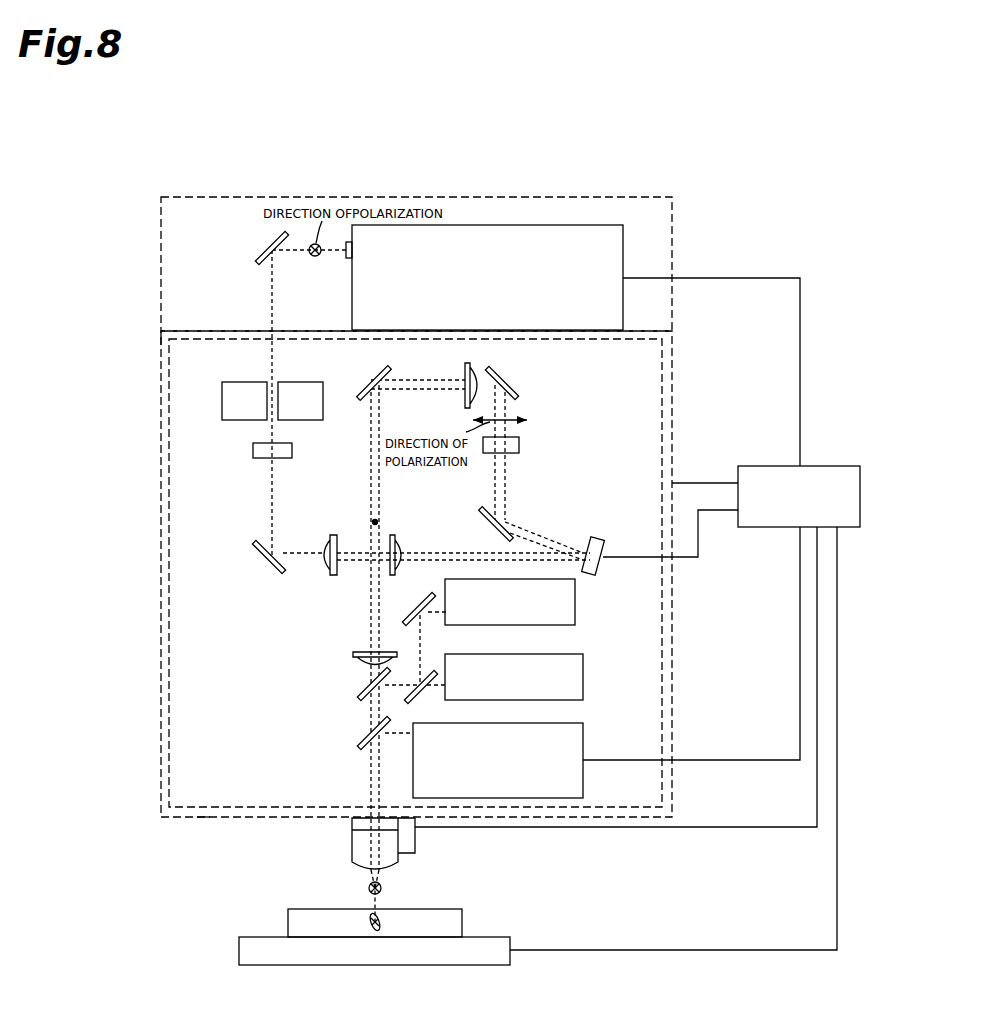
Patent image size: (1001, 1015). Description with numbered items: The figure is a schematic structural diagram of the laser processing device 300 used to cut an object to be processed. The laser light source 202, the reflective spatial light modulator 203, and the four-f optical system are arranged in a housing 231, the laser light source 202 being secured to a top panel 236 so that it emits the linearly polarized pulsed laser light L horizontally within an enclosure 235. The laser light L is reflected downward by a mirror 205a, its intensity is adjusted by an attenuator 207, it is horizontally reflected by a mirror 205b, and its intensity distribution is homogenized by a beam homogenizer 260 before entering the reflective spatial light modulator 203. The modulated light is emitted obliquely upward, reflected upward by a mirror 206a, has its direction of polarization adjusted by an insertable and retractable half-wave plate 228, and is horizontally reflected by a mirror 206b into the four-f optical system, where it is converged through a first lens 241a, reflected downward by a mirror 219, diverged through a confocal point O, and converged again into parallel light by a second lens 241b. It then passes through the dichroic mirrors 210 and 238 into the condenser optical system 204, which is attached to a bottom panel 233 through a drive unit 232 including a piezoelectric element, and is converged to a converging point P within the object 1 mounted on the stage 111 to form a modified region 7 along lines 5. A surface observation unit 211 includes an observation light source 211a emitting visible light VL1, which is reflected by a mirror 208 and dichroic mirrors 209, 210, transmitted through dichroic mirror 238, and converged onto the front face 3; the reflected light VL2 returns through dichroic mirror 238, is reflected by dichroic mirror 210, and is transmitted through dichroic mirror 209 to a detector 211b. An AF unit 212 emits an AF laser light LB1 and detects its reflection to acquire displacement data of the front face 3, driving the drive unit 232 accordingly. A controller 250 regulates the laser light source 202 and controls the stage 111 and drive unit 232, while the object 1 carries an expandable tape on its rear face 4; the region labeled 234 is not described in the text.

The laser processing device 300 is at (668, 152).
The enclosure 235 is at (232, 196).
The optical system housing 234 is at (162, 630).
The top panel 236 is at (642, 333).
The housing 231 is at (152, 344).
The bottom panel 233 is at (197, 816).
The laser light source 202 is at (623, 245).
The mirror 205a is at (268, 240).
The mirror 205b is at (276, 567).
The laser light L is at (272, 290).
The mirror 219 is at (376, 376).
The attenuator 207 is at (235, 443).
The first lens 241a is at (474, 360).
The second lens 241b is at (353, 655).
The mirror 206a is at (484, 512).
The mirror 206b is at (517, 392).
The half-wave plate 228 is at (521, 445).
The confocal point O is at (376, 520).
The reflective spatial light modulator 203 is at (597, 537).
The beam homogenizer 260 is at (352, 582).
The mirror 208 is at (413, 614).
The dichroic mirror 210 is at (360, 692).
The dichroic mirror 209 is at (421, 700).
The dichroic mirror 238 is at (360, 743).
The AF laser light LB1 is at (400, 735).
The visible light VL1 is at (446, 612).
The reflected light VL2 is at (445, 678).
The observation light source 211a is at (575, 605).
The detector 211b is at (583, 680).
The surface observation unit 211 is at (733, 595).
The AF unit 212 is at (583, 738).
The controller 250 is at (818, 466).
The condenser optical system 204 is at (350, 858).
The drive unit 232 is at (418, 843).
The line 5 is at (383, 890).
The front face 3 is at (298, 908).
The object 1 is at (284, 915).
The stage 111 is at (238, 948).
The rear face 4 is at (310, 938).
The modified region 7 is at (373, 930).
The converging point P is at (380, 925).